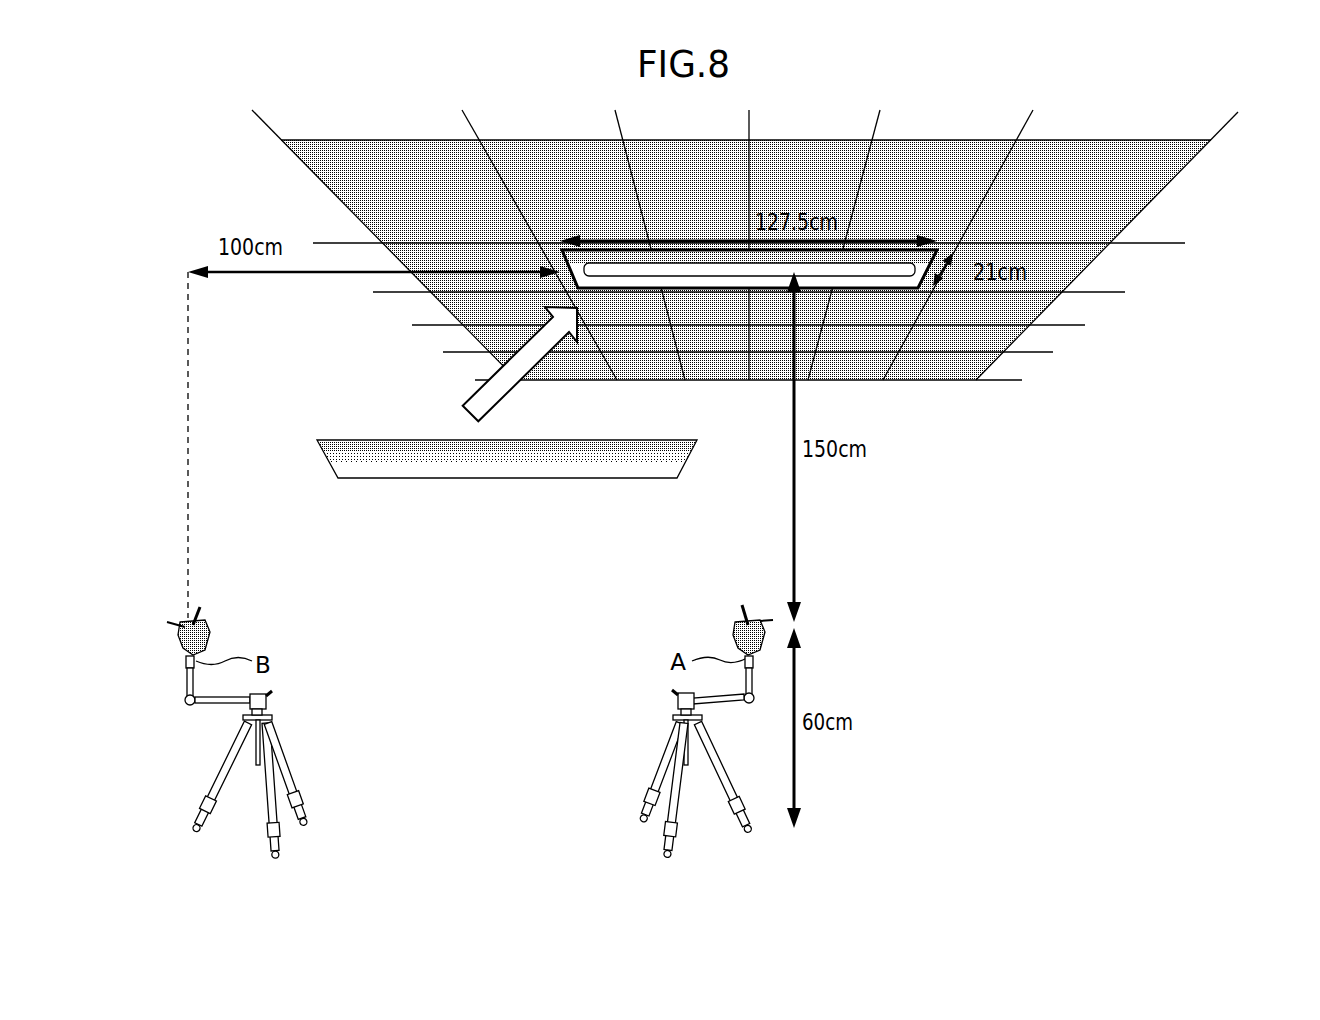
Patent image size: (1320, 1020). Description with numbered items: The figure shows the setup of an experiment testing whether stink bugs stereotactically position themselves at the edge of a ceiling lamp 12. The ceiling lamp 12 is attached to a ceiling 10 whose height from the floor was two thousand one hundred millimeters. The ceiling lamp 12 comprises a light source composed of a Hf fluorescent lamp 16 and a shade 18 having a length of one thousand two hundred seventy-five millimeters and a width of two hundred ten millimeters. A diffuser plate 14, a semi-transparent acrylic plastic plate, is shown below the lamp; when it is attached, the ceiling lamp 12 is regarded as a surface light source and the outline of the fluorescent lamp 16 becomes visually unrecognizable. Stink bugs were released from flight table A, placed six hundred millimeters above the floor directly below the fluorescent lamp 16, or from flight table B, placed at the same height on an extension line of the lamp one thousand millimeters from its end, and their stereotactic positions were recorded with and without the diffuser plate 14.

The ceiling 10 is at (1105, 153).
The ceiling lamp 12 is at (916, 194).
The diffuser plate 14 is at (502, 463).
The Hf fluorescent lamp 16 is at (847, 268).
The shade 18 is at (892, 280).